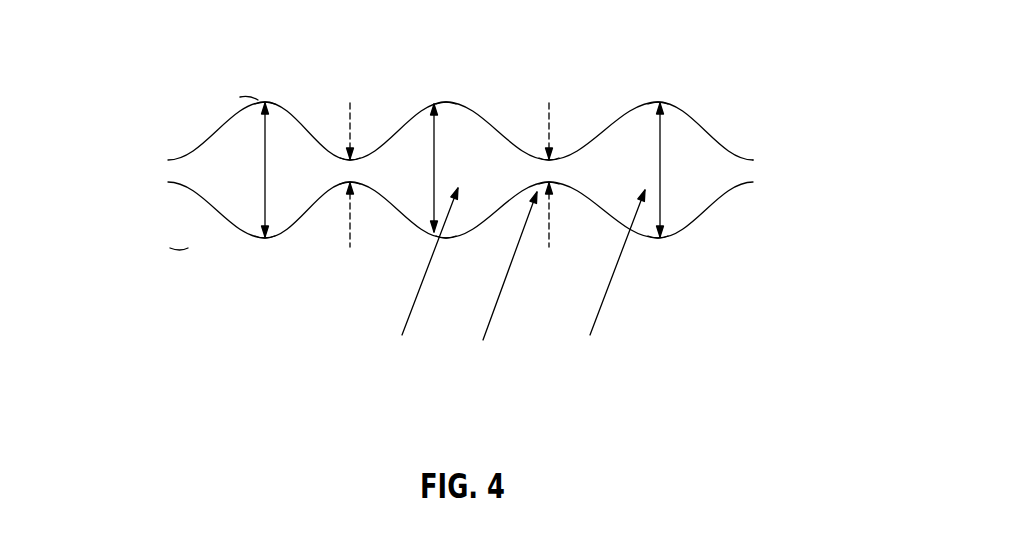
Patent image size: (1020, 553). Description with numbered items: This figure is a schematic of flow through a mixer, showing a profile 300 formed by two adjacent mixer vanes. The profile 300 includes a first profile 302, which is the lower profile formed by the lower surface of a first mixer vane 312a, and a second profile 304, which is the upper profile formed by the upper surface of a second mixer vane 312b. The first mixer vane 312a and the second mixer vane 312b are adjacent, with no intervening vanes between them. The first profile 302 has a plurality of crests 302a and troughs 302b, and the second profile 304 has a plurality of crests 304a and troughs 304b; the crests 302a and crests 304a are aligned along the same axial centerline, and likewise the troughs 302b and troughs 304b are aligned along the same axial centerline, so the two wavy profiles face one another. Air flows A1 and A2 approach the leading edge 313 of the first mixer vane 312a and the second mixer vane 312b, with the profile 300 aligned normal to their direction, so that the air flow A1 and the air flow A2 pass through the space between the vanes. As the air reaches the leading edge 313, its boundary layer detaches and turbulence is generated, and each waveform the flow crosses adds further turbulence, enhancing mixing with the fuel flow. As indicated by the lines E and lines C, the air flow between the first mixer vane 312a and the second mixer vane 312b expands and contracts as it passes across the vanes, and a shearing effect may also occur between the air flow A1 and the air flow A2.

The profile 300 is at (402, 157).
The first profile 302 is at (232, 115).
The crests 302a is at (267, 100).
The troughs 302b is at (357, 157).
The second profile 304 is at (213, 213).
The crests 304a is at (253, 240).
The troughs 304b is at (338, 193).
The first mixer vane 312a is at (240, 97).
The second mixer vane 312b is at (170, 248).
The leading edge 313 is at (772, 172).
The lines E is at (262, 178).
The lines C is at (340, 135).
The air flow A1 is at (523, 275).
The air flow A2 is at (510, 277).